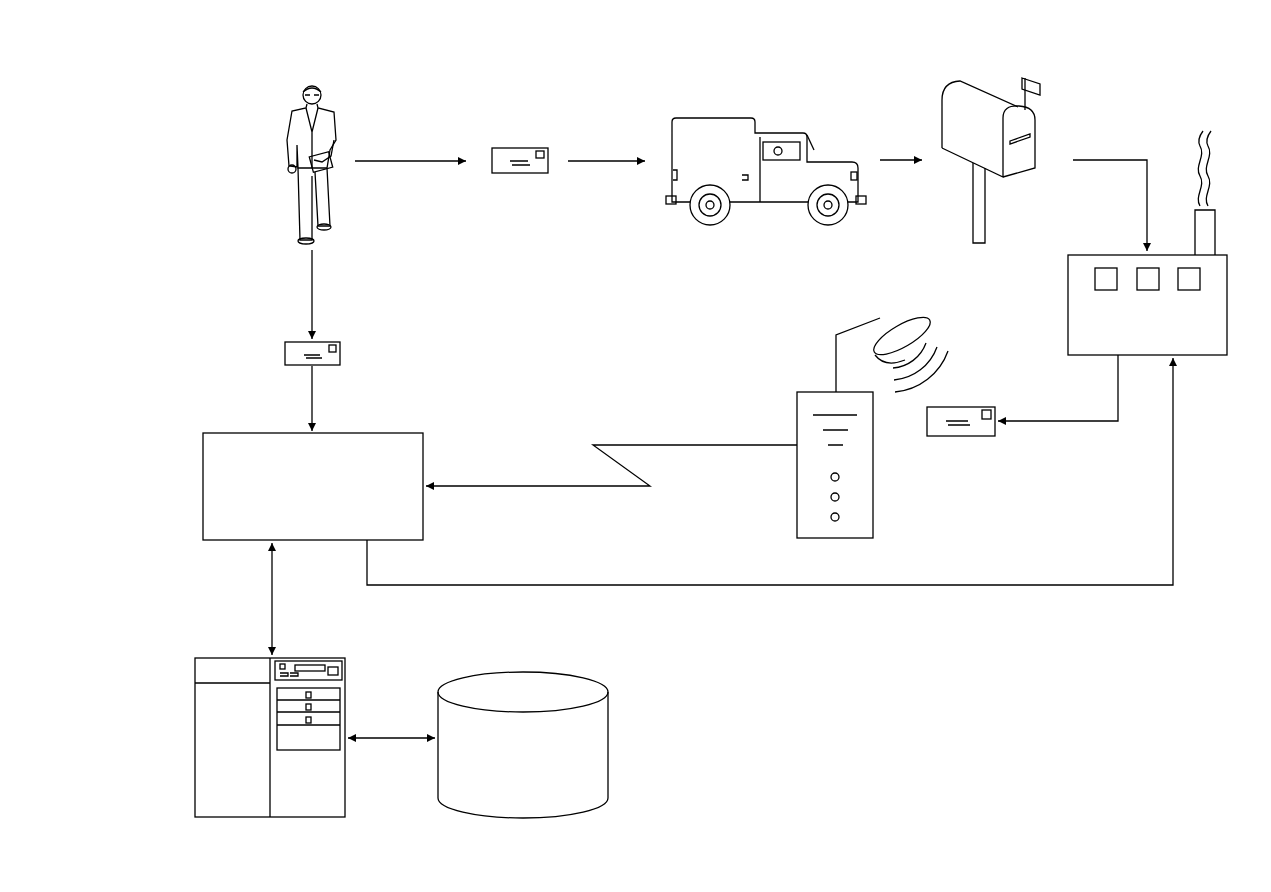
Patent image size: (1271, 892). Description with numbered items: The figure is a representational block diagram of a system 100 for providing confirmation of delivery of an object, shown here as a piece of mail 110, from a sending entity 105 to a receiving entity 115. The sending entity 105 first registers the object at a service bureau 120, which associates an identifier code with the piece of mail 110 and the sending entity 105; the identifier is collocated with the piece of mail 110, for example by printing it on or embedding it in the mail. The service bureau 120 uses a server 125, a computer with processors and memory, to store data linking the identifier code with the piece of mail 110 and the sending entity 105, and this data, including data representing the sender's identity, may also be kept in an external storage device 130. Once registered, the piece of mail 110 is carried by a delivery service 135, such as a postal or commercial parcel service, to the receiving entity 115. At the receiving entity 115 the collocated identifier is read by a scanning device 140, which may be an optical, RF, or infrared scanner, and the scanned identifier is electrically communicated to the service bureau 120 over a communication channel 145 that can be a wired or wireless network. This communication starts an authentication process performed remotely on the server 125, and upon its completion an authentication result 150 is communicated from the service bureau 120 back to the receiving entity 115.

The system 100 is at (1167, 72).
The sending entity 105 is at (293, 115).
The piece of mail 110 is at (335, 172).
The receiving entity 115 is at (1093, 255).
The service bureau 120 is at (407, 433).
The server 125 is at (330, 658).
The storage device 130 is at (523, 672).
The delivery service 135 is at (695, 118).
The scanning device 140 is at (836, 363).
The communication channel 145 is at (652, 445).
The authentication result 150 is at (1099, 660).